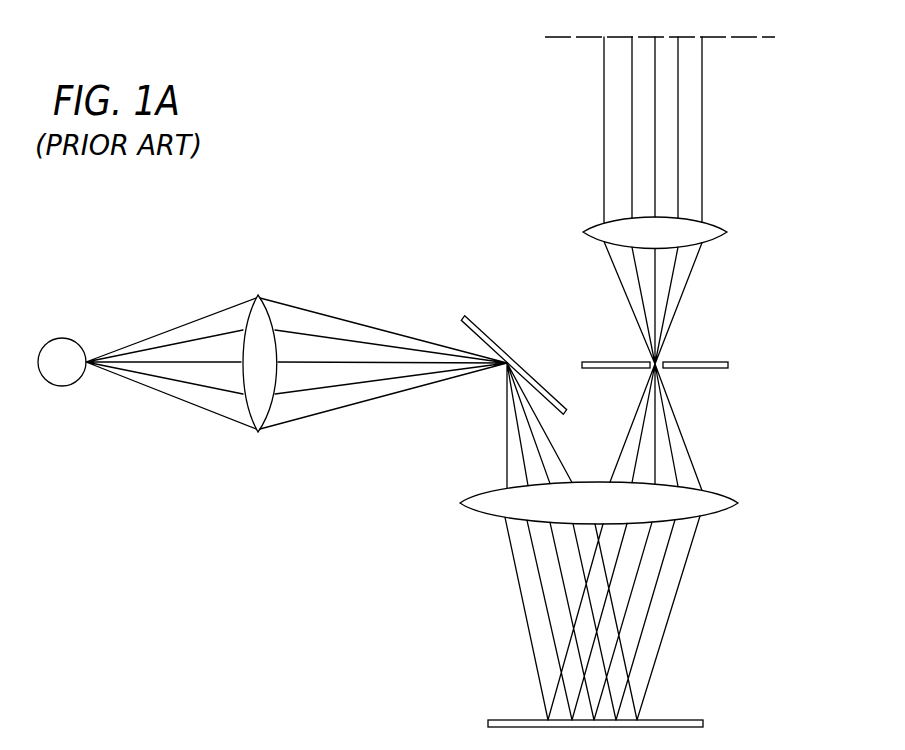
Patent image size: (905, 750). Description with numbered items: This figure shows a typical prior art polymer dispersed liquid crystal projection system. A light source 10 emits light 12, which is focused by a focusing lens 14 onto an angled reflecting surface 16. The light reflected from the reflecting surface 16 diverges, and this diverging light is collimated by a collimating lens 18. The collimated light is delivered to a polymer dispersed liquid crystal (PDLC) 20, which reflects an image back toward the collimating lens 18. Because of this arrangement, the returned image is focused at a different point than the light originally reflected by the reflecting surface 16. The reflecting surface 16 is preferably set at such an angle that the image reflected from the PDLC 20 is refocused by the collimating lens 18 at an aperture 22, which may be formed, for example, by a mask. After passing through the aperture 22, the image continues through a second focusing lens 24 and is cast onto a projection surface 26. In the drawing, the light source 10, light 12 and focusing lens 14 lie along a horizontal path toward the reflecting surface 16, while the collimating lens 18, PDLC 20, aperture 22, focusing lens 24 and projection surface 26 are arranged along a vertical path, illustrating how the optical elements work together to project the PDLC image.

The light source 10 is at (60, 338).
The light 12 is at (167, 398).
The focusing lens 14 is at (258, 433).
The reflecting surface 16 is at (480, 330).
The collimating lens 18 is at (484, 492).
The polymer dispersed liquid crystal (PDLC) 20 is at (698, 720).
The aperture 22 is at (730, 363).
The focusing lens 24 is at (728, 232).
The projection surface 26 is at (770, 40).